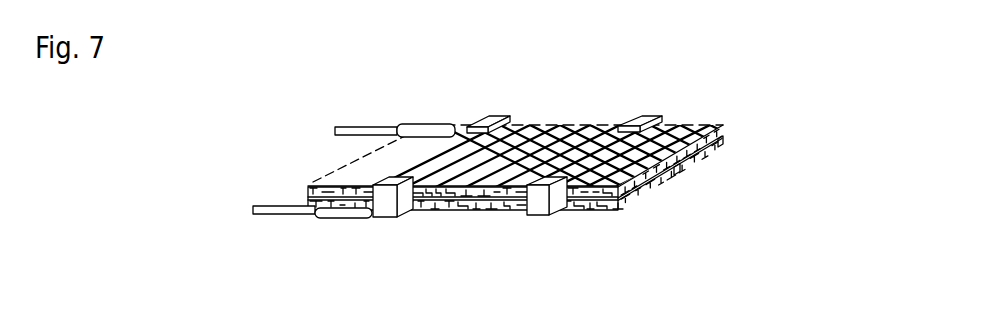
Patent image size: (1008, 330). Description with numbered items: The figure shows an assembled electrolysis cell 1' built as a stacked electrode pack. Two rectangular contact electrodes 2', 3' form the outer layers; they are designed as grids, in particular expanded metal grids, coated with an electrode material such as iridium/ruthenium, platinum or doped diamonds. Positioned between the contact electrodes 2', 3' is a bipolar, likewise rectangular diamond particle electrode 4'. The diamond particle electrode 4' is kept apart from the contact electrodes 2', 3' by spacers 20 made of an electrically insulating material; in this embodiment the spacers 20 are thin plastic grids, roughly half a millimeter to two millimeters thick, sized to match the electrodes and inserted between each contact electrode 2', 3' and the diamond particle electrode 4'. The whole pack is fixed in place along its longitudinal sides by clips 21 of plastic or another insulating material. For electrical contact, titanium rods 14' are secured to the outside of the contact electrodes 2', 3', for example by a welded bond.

The electrolysis cell 1' is at (515, 122).
The contact electrode 2' is at (515, 165).
The contact electrode 3' is at (515, 228).
The diamond particle electrode 4' is at (565, 175).
The titanium rods 14' is at (346, 125).
The spacers 20 is at (722, 142).
The clips 21 is at (640, 122).